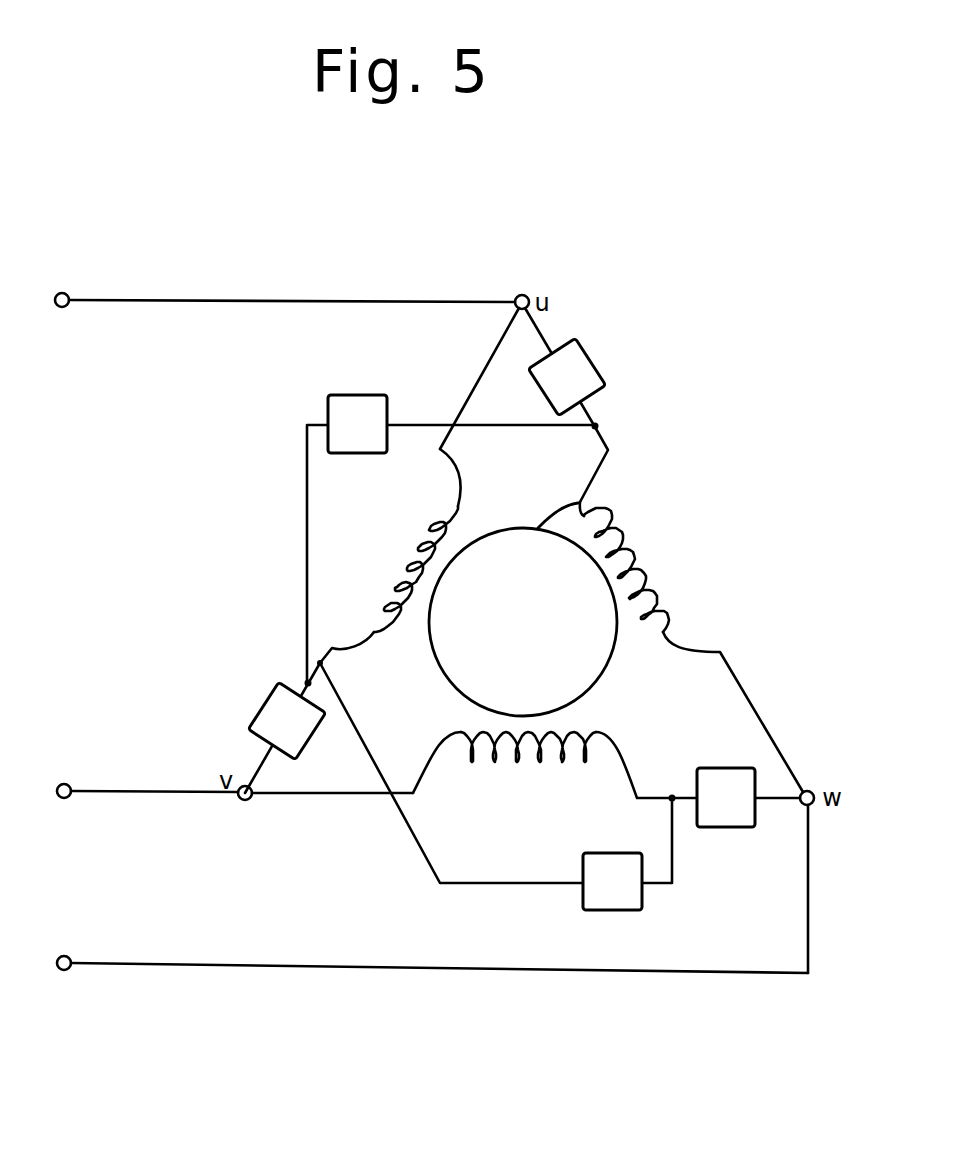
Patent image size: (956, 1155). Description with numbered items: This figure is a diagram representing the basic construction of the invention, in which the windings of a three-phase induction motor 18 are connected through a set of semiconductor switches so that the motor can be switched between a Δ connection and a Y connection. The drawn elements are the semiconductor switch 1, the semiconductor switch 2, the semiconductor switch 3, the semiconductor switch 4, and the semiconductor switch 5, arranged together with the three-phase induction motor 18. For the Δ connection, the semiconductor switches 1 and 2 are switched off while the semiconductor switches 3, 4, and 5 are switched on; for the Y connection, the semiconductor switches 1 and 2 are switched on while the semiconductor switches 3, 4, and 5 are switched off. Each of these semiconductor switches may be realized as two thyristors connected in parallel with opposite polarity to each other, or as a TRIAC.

The semiconductor switch 1 is at (625, 912).
The semiconductor switch 2 is at (352, 395).
The semiconductor switch 3 is at (592, 357).
The semiconductor switch 4 is at (260, 702).
The semiconductor switch 5 is at (722, 768).
The three-phase induction motor 18 is at (580, 502).